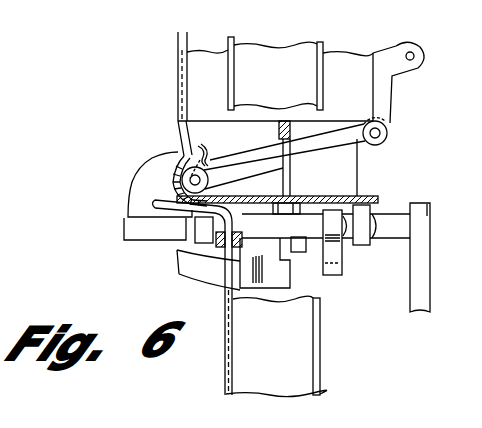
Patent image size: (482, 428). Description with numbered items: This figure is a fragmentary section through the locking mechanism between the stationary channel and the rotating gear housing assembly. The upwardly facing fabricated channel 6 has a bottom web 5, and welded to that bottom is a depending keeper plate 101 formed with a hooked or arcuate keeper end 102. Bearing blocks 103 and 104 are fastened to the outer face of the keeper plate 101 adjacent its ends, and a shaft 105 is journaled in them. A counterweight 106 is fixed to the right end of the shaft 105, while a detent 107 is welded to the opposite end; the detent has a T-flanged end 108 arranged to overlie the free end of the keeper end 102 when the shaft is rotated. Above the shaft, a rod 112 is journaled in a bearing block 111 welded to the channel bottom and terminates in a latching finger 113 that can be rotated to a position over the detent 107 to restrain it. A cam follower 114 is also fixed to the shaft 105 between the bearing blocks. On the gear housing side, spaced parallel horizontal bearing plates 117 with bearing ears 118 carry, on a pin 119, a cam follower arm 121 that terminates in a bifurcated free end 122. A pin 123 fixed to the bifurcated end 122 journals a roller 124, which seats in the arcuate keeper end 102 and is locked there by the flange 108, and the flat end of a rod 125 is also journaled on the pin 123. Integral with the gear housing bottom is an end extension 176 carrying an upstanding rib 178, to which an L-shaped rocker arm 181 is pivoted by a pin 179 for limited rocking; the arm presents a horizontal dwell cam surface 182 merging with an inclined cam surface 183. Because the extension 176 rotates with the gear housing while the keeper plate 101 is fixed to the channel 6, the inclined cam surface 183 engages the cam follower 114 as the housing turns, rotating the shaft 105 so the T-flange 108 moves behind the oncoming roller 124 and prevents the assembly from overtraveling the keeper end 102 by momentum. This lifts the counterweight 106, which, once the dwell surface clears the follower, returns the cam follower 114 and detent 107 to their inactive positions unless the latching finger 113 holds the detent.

The bottom web 5 is at (286, 81).
The fabricated channel 6 is at (312, 34).
The keeper plate 101 is at (366, 196).
The keeper end 102 is at (171, 179).
The bearing block 103 is at (200, 232).
The bearing block 104 is at (363, 240).
The shaft 105 is at (138, 236).
The counterweight 106 is at (431, 258).
The detent 107 is at (143, 167).
The T-flanged end 108 is at (180, 153).
The bearing block 111 is at (243, 241).
The rod 112 is at (228, 293).
The latching finger 113 is at (153, 203).
The cam follower 114 is at (342, 262).
The bearing plate 117 is at (386, 110).
The bearing ear 118 is at (402, 67).
The pin 119 is at (388, 133).
The cam follower arm 121 is at (318, 147).
The bifurcated free end 122 is at (202, 150).
The pin 123 is at (198, 176).
The roller 124 is at (218, 187).
The rod 125 is at (178, 42).
The end extension 176 is at (357, 166).
The rib 178 is at (279, 134).
The pin 179 is at (303, 199).
The rocker arm 181 is at (288, 273).
The dwell cam surface 182 is at (273, 282).
The inclined cam surface 183 is at (200, 272).